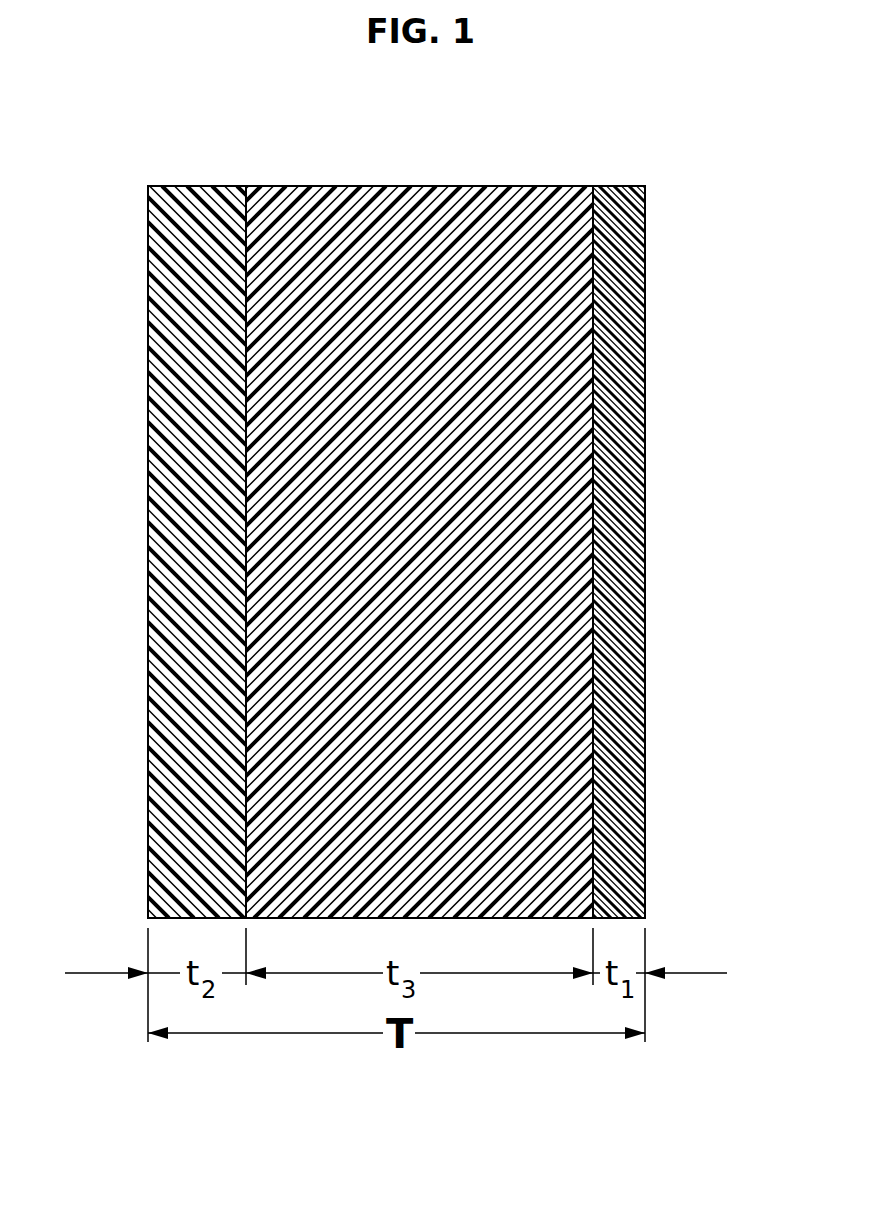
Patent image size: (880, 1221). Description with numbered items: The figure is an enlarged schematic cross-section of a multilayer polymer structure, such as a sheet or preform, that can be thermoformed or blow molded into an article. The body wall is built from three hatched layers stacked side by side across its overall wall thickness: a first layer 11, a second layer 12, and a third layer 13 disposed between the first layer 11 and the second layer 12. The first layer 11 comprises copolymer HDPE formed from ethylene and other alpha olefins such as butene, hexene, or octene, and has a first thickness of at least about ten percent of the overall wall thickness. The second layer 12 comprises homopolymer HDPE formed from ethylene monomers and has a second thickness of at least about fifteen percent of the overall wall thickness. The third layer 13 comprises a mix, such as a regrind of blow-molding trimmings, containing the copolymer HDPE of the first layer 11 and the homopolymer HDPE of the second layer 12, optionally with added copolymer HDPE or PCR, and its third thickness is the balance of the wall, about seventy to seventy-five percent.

The first layer 11 is at (633, 282).
The second layer 12 is at (180, 263).
The third layer 13 is at (470, 198).